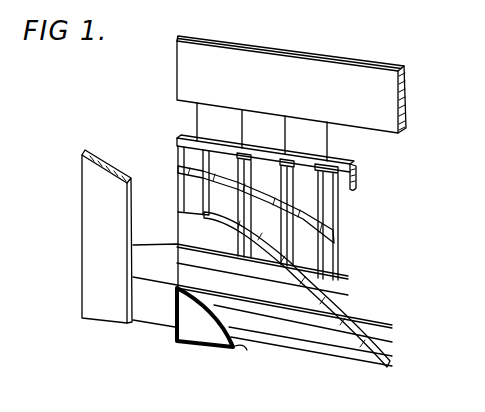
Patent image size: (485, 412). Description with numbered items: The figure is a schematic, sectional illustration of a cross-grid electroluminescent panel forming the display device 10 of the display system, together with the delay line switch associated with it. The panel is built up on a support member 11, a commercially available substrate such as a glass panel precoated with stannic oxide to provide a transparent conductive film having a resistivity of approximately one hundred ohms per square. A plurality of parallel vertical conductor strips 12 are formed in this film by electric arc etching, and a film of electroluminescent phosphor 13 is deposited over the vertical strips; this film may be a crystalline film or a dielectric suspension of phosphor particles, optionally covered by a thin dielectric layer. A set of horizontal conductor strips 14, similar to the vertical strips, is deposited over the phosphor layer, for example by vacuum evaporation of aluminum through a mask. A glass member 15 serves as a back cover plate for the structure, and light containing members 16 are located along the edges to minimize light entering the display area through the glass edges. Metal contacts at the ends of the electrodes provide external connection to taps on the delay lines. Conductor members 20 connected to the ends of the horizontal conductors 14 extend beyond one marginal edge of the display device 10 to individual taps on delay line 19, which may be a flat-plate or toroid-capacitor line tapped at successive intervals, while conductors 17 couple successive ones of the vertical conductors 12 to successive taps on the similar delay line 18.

The display device 10 is at (429, 235).
The support member 11 is at (352, 167).
The vertical conductor strips 12 is at (193, 153).
The electroluminescent phosphor film 13 is at (345, 323).
The horizontal conductor strips 14 is at (334, 358).
The glass member 15 is at (244, 351).
The light containing members 16 is at (186, 347).
The conductors 17 is at (197, 120).
The delay line 18 is at (358, 72).
The delay line 19 is at (86, 302).
The conductor members 20 is at (148, 325).